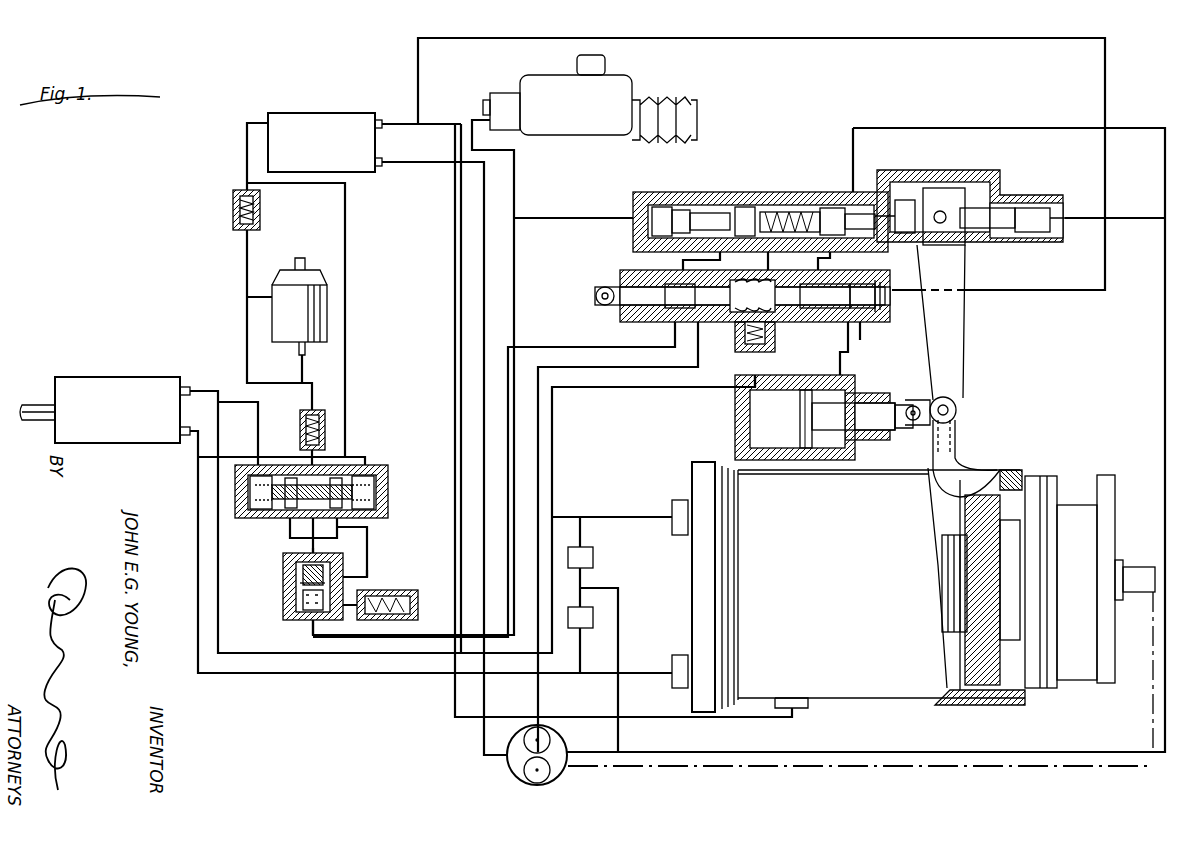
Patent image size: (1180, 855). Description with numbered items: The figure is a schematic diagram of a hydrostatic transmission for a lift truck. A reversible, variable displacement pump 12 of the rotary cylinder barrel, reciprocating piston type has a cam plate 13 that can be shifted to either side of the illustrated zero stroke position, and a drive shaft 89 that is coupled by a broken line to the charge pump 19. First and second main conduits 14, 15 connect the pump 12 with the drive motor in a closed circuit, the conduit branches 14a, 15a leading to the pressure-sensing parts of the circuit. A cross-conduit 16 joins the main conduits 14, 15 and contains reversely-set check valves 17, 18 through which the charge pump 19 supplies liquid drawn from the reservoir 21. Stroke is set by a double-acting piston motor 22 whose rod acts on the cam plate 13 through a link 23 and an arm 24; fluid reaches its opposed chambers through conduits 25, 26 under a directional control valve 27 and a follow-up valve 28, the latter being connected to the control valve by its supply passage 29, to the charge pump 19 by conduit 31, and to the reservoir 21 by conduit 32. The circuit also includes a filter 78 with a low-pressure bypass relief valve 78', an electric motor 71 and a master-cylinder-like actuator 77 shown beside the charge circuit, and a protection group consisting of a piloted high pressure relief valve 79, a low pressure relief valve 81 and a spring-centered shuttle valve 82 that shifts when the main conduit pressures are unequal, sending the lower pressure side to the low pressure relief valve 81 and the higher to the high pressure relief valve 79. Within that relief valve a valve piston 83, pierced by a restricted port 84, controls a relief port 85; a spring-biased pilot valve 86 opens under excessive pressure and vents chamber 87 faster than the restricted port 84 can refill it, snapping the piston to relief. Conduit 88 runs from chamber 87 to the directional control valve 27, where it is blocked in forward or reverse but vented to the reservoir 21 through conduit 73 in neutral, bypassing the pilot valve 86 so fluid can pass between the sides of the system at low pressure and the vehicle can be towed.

The variable displacement pump 12 is at (1003, 468).
The cam plate 13 is at (978, 528).
The first main conduit 14 is at (632, 512).
The conductor 14a is at (672, 336).
The second main conduit 15 is at (638, 672).
The conductor 15a is at (618, 537).
The cross-conduit 16 is at (600, 572).
The check valve 17 is at (596, 560).
The check valve 18 is at (596, 614).
The charge pump 19 is at (515, 777).
The reservoir 21 is at (330, 113).
The double-acting piston motor 22 is at (862, 392).
The link 23 is at (912, 430).
The arm 24 is at (962, 445).
The conduit 25 is at (768, 365).
The conduit 26 is at (862, 334).
The directional control valve 27 is at (620, 272).
The follow-up valve 28 is at (790, 190).
The supply passage 29 is at (832, 262).
The conduit 31 is at (1162, 336).
The conduit 32 is at (766, 262).
The auxiliary motor 71 is at (102, 378).
The conduit 73 is at (1050, 290).
The master cylinder 77 is at (580, 125).
The filter 78 is at (299, 306).
The low-pressure bypass relief valve 78' is at (226, 210).
The piloted high pressure relief valve 79 is at (283, 616).
The low pressure relief valve 81 is at (326, 424).
The shuttle valve 82 is at (385, 468).
The valve piston 83 is at (296, 588).
The restricted port 84 is at (330, 553).
The relief port 85 is at (370, 572).
The spring-biased pilot valve 86 is at (388, 598).
The chamber 87 is at (305, 626).
The conduit 88 is at (585, 356).
The drive shaft 89 is at (1132, 566).